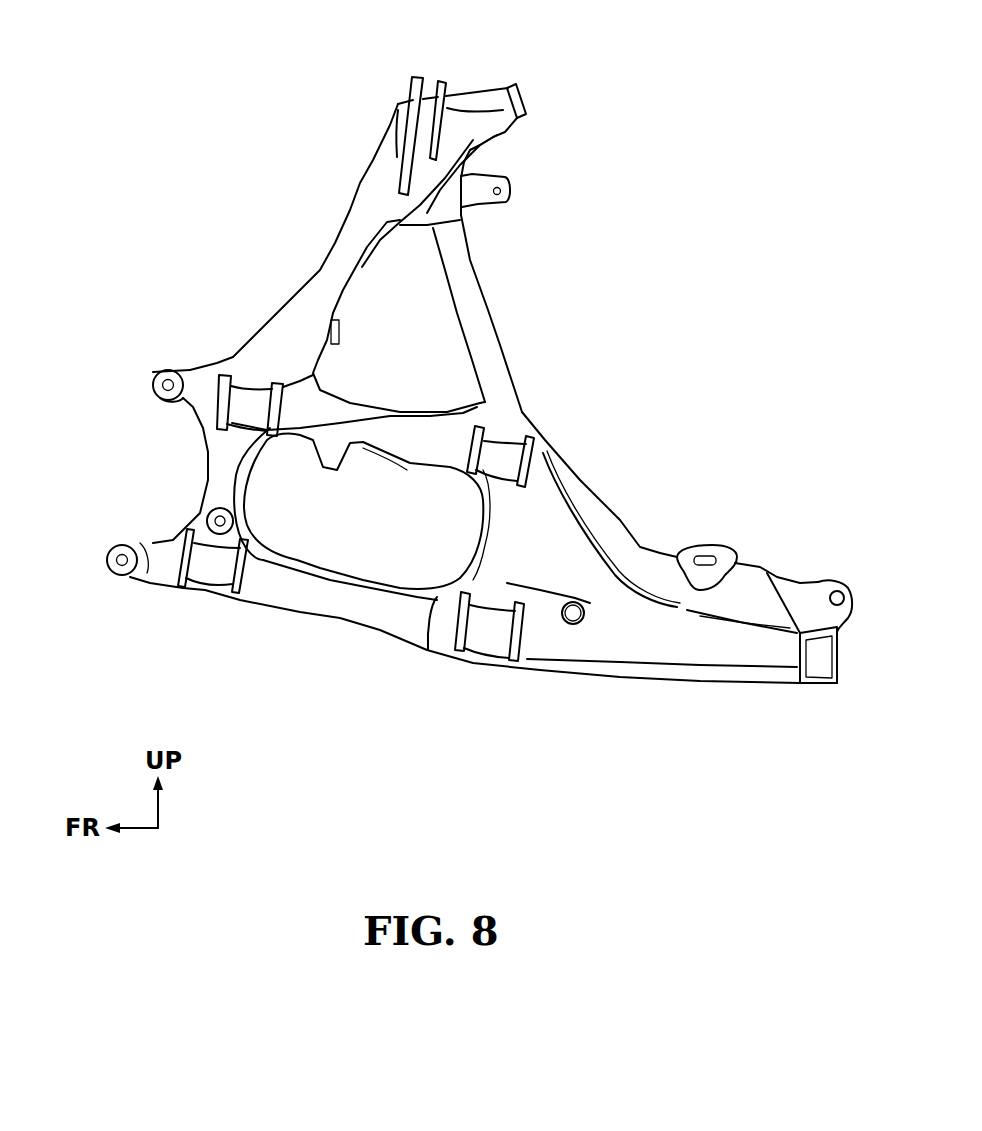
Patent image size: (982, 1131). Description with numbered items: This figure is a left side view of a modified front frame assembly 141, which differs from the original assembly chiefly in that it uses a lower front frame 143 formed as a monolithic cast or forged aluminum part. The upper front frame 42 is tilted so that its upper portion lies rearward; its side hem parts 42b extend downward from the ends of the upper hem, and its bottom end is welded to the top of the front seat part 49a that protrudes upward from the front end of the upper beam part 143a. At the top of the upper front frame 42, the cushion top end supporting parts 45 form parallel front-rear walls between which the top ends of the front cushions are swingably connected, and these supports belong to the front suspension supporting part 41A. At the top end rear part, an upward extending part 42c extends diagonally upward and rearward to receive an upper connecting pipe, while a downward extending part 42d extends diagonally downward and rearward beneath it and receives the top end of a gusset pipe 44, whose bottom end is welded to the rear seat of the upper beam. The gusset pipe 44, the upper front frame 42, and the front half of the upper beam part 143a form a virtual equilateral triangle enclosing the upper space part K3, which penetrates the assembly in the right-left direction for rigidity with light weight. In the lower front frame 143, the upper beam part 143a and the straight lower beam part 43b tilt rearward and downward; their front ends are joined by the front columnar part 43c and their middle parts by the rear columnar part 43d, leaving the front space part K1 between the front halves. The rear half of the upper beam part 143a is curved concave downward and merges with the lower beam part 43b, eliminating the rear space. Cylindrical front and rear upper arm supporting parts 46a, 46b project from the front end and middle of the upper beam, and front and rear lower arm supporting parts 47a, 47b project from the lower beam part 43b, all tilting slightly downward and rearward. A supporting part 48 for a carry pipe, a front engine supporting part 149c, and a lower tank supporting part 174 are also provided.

The front suspension supporting part 41A is at (193, 647).
The upper front frame 42 is at (312, 246).
The side hem part 42b is at (315, 268).
The upward extending part 42c is at (486, 88).
The downward extending part 42d is at (428, 210).
The lower beam part 43b is at (380, 622).
The front columnar part 43c is at (212, 480).
The rear columnar part 43d is at (484, 538).
The gusset pipe 44 is at (463, 312).
The cushion top end supporting part 45 is at (397, 117).
The front upper arm supporting part 46a is at (247, 392).
The rear upper arm supporting part 46b is at (503, 463).
The front lower arm supporting part 47a is at (205, 587).
The rear lower arm supporting part 47b is at (490, 636).
The supporting part for a carry pipe 48 is at (158, 373).
The front seat part 49a is at (523, 410).
The front frame assembly 141 is at (188, 227).
The lower front frame 143 is at (245, 606).
The upper beam part 143a is at (417, 425).
The front engine supporting part 149c is at (822, 582).
The lower tank supporting part 174 is at (715, 546).
The front space part K1 is at (317, 631).
The upper space part K3 is at (372, 295).